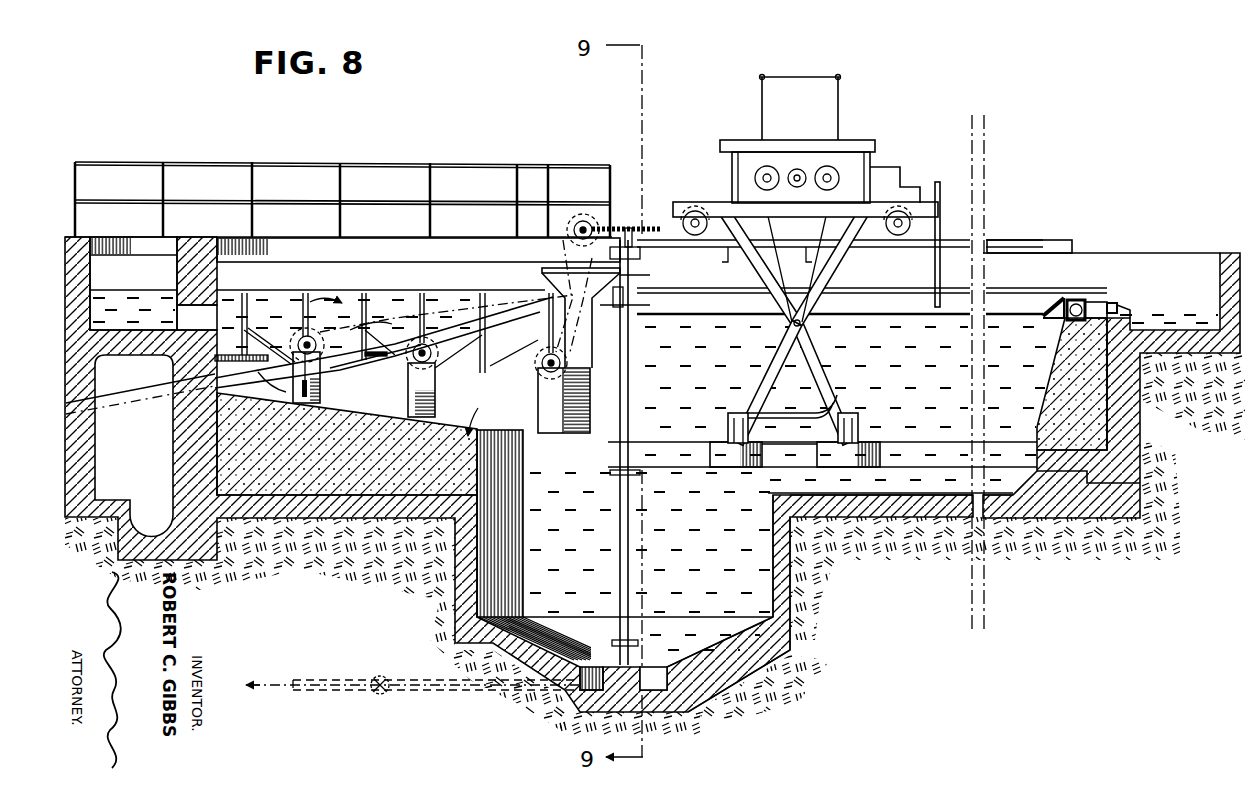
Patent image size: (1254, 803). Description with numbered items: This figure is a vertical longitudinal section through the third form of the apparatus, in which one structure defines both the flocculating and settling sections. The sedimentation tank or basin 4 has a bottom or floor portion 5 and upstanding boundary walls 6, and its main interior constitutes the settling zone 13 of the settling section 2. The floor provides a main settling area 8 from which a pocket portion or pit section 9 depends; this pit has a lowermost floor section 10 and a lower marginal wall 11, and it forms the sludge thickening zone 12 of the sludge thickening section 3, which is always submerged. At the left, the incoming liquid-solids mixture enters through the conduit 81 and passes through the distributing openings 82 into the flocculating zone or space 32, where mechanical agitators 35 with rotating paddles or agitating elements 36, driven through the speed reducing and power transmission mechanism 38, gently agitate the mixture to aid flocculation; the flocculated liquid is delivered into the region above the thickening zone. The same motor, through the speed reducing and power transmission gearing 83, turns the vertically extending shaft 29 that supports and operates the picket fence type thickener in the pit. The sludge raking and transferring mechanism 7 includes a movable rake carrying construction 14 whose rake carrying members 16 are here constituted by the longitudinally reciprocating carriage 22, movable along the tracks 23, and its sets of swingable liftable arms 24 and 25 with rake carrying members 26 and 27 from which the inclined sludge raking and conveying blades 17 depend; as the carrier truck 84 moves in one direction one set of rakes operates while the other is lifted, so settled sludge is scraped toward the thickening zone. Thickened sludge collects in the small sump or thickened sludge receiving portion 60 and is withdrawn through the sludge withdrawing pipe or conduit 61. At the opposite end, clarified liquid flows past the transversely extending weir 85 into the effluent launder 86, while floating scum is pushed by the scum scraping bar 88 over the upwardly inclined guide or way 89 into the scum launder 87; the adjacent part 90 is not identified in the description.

The sedimentation or settling section 2 is at (806, 403).
The sludge thickening section 3 is at (780, 546).
The sedimentation tank or basin 4 is at (1069, 384).
The bottom or floor portion 5 is at (888, 512).
The upstanding boundary walls 6 is at (1052, 398).
The sludge raking and transferring mechanism 7 is at (789, 435).
The main settling area 8 is at (943, 512).
The pocket portion or pit section 9 is at (777, 638).
The lowermost floor section 10 is at (708, 648).
The lower marginal wall 11 is at (782, 594).
The sludge thickening zone 12 is at (547, 545).
The settling zone 13 is at (1003, 403).
The movable rake carrying construction 14 is at (807, 180).
The rake carrying members 16 is at (792, 394).
The sludge raking and conveying blades 17 is at (836, 456).
The longitudinally reciprocating carriage 22 is at (903, 193).
The tracks 23 is at (1030, 247).
The swingable liftable arms 24 is at (832, 380).
The swingable liftable arms 25 is at (777, 358).
The rake carrying member 26 is at (858, 440).
The rake carrying member 27 is at (728, 437).
The vertically extending shaft 29 is at (628, 354).
The flocculating zone or space 32 is at (470, 337).
The mechanical agitators 35 is at (303, 323).
The mechanical agitating elements 36 is at (428, 338).
The speed reducing and power transmission mechanism 38 is at (572, 301).
The small sump or thickened sludge receiving portion 60 is at (653, 678).
The sludge withdrawing pipe or conduit 61 is at (443, 689).
The conduit 81 is at (133, 283).
The distributing openings 82 is at (197, 319).
The speed reducing and power transmission gearing 83 is at (636, 224).
The carrier truck 84 is at (748, 163).
The transversely extending weir 85 is at (1116, 304).
The effluent launder 86 is at (1176, 318).
The scum launder 87 is at (1077, 300).
The scum scraping bar 88 is at (940, 298).
The upwardly inclined guide or way 89 is at (1052, 298).
The weir plate 90 is at (1085, 304).